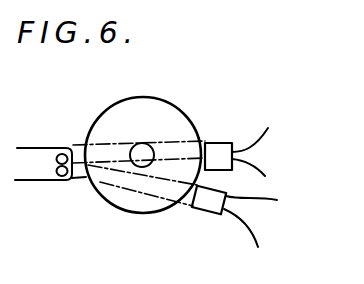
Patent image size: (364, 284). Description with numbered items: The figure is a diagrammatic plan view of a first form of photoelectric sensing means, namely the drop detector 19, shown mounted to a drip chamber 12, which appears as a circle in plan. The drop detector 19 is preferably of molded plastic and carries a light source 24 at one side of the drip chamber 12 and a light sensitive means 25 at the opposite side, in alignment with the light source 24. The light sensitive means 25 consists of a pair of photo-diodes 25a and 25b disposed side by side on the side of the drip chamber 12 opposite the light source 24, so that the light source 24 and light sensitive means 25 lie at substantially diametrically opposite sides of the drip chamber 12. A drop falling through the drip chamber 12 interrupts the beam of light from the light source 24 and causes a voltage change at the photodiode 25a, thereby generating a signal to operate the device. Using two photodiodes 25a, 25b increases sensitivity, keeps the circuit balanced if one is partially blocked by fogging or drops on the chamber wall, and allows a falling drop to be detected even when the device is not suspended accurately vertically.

The drip chamber 12 is at (126, 210).
The drop detector 19 is at (179, 148).
The light source 24 is at (51, 181).
The light sensitive means 25 is at (272, 190).
The photo-diode 25a is at (219, 143).
The photo-diode 25b is at (207, 213).